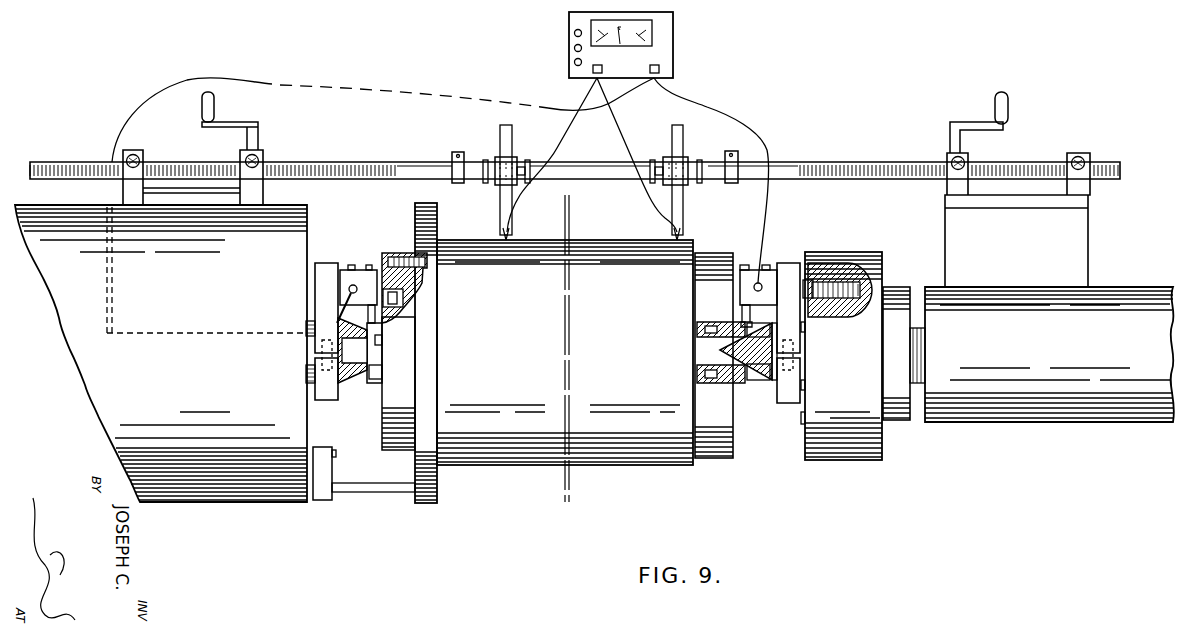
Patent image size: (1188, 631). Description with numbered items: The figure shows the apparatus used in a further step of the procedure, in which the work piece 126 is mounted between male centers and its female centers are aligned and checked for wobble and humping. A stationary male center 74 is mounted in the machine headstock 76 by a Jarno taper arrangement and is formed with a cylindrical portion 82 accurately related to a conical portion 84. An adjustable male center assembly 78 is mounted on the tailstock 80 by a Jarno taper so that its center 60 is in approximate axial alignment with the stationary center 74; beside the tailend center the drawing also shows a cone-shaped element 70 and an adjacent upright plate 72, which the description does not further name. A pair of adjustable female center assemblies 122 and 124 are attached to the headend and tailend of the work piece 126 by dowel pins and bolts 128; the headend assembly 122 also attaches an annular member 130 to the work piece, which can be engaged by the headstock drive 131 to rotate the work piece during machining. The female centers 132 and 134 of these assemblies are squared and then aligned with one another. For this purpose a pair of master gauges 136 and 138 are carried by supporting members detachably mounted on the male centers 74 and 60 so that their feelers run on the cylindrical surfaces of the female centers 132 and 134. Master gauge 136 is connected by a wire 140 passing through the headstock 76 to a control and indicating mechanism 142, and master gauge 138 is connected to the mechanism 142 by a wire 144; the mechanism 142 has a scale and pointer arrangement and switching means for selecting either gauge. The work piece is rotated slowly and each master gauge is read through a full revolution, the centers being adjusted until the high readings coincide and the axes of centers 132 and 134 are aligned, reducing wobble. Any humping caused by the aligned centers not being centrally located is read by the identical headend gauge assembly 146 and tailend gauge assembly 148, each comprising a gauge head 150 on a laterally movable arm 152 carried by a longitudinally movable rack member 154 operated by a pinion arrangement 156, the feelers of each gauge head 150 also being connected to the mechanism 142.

The male center 60 is at (702, 352).
The cone center 70 is at (748, 351).
The slide plate 72 is at (770, 403).
The stationary male center 74 is at (351, 389).
The machine headstock 76 is at (240, 500).
The adjustable male center assembly 78 is at (829, 463).
The tailstock 80 is at (953, 410).
The cylindrical portion 82 is at (307, 388).
The conical portion 84 is at (356, 344).
The adjustable female center assembly 122 is at (380, 434).
The adjustable female center assembly 124 is at (716, 461).
The work piece 126 is at (620, 319).
The bolts 128 is at (380, 254).
The annular member 130 is at (423, 503).
The headstock drive 131 is at (341, 497).
The female center 132 is at (371, 389).
The female center 134 is at (742, 386).
The master gauge 136 is at (362, 268).
The master gauge 138 is at (771, 266).
The wire 140 is at (150, 98).
The control and indicating mechanism 142 is at (676, 40).
The wire 144 is at (767, 207).
The headend gauge assembly 146 is at (460, 143).
The tailend gauge assembly 148 is at (694, 150).
The gauge head 150 is at (505, 232).
The laterally movable arm 152 is at (500, 197).
The longitudinally movable rack member 154 is at (333, 166).
The pinion arrangement 156 is at (262, 151).